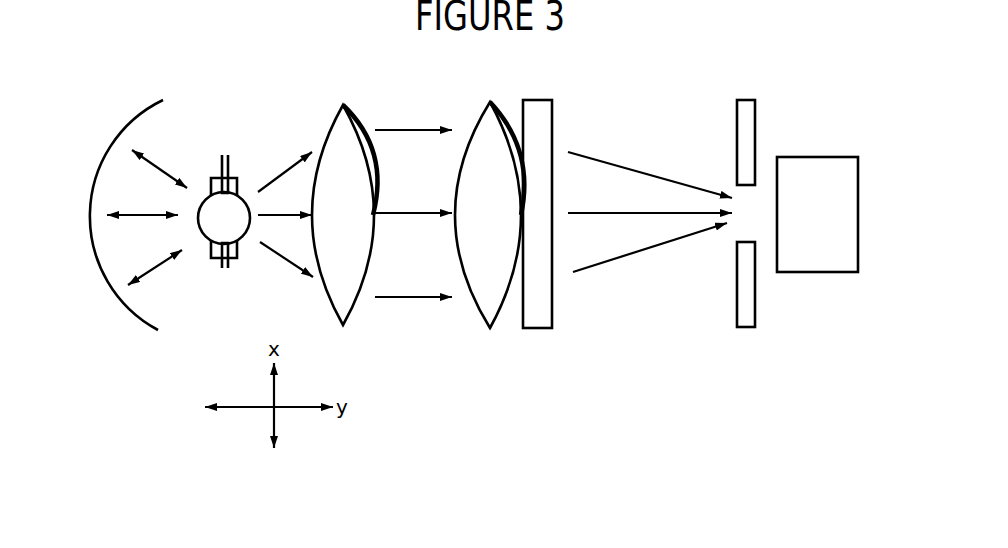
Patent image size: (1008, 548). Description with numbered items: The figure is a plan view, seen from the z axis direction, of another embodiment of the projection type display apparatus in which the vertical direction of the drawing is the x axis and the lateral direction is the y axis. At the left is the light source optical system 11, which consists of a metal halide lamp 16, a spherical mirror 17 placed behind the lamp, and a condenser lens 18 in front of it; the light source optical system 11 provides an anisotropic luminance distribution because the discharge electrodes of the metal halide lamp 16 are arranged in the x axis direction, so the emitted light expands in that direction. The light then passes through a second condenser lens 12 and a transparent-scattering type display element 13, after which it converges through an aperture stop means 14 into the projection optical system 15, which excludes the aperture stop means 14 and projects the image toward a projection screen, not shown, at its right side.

The light source optical system 11 is at (215, 322).
The second condenser lens 12 is at (485, 101).
The transparent-scattering type display element 13 is at (552, 98).
The aperture stop means 14 is at (746, 100).
The projection optical system 15 is at (812, 172).
The metal halide lamp 16 is at (213, 178).
The spherical mirror 17 is at (112, 143).
The condenser lens 18 is at (325, 128).